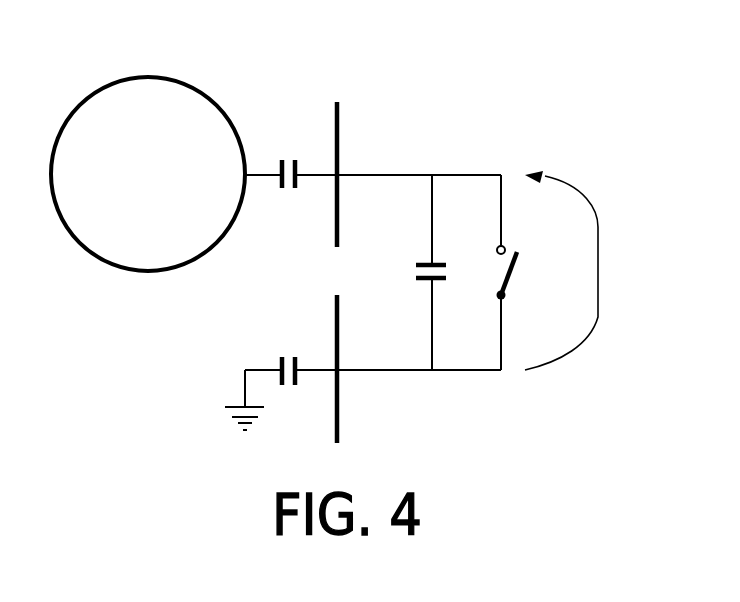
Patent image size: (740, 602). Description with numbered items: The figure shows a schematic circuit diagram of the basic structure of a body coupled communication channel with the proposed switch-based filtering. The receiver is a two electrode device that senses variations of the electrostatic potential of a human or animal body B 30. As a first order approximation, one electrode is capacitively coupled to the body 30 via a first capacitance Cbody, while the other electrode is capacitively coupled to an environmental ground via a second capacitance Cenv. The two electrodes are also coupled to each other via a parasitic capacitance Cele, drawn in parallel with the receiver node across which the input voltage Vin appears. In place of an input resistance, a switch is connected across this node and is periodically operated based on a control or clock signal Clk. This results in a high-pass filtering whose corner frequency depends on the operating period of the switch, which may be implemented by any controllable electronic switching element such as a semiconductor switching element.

The body 30 is at (148, 140).
The body B is at (148, 184).
The first capacitance Cbody is at (373, 191).
The second capacitance Cenv is at (363, 375).
The parasitic capacitance Cele is at (404, 272).
The clock signal Clk is at (483, 264).
The input voltage Vin is at (576, 270).